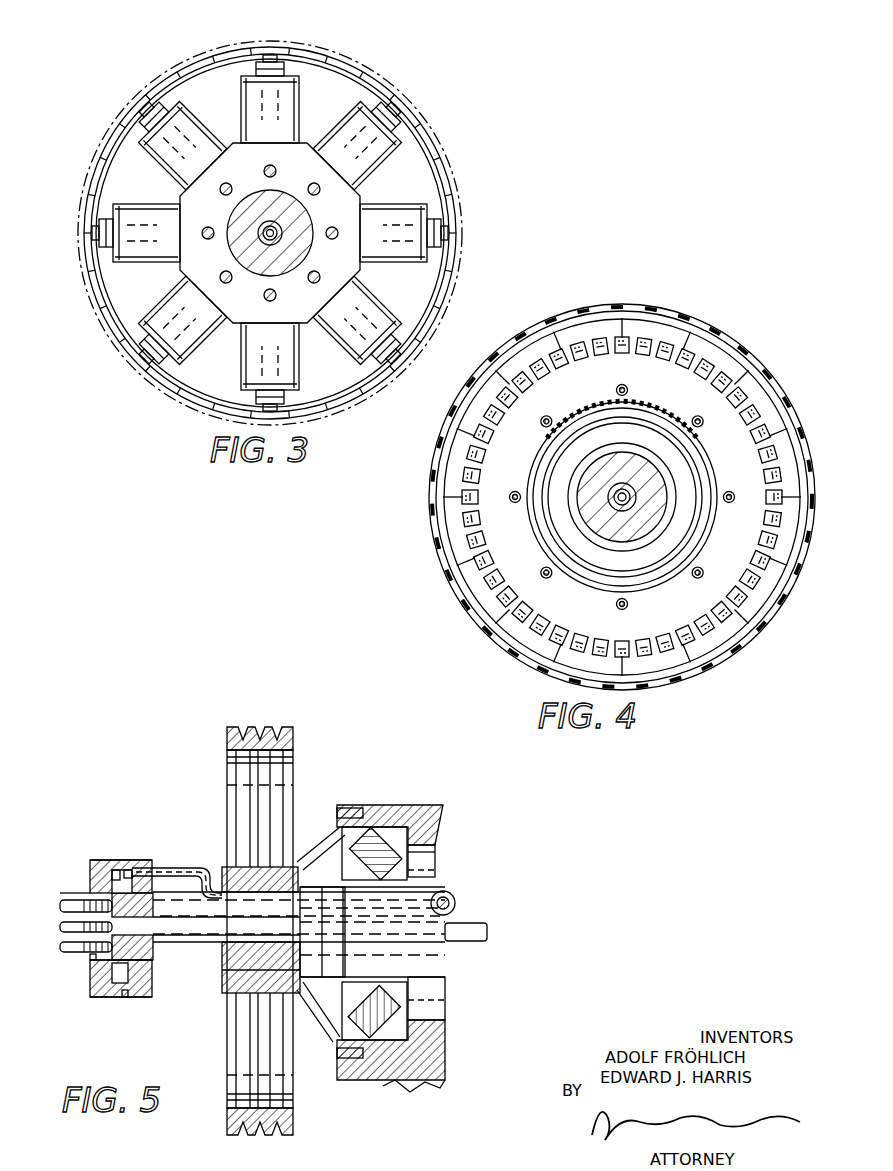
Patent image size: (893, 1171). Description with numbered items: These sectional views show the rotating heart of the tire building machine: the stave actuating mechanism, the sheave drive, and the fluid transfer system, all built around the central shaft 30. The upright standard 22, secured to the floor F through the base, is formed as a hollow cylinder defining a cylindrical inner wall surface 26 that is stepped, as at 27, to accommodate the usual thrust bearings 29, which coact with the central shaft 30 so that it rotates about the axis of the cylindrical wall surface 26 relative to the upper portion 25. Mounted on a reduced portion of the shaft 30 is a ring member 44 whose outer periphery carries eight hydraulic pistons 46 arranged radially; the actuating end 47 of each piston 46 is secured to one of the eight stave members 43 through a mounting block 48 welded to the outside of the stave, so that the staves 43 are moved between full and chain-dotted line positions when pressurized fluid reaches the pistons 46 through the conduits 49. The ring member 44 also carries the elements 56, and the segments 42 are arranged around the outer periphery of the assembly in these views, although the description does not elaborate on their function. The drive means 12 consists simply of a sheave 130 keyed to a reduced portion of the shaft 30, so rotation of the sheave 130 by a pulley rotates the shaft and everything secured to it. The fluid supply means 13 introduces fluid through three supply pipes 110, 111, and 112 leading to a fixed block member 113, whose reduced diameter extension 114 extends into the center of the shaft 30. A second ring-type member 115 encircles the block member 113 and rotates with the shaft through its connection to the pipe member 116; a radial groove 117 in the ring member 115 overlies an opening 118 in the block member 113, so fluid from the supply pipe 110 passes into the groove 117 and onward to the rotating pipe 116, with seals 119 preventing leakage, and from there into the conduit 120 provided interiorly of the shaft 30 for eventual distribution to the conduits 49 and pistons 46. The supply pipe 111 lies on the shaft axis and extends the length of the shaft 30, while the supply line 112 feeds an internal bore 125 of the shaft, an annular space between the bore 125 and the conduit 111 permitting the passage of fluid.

In FIG. 3, the stave member 43 is at (222, 52).
In FIG. 3, the mounting block 48 is at (108, 158).
In FIG. 3, the hydraulic piston 46 is at (300, 100).
In FIG. 3, the actuating end 47 is at (390, 110).
In FIG. 3, the ring member 44 is at (308, 311).
In FIG. 3, the bolt hole 56 is at (317, 186).
In FIG. 3, the internal bore 125 is at (258, 262).
In FIG. 4, the internal bore 125 is at (608, 540).
In FIG. 5, the internal bore 125 is at (470, 922).
In FIG. 3, the supply pipe 111 is at (282, 232).
In FIG. 4, the supply pipe 111 is at (636, 494).
In FIG. 5, the supply pipe 111 is at (66, 932).
In FIG. 4, the floor F is at (768, 380).
In FIG. 4, the magnet block 42 is at (745, 372).
In FIG. 4, the conduit 49 is at (696, 415).
In FIG. 5, the drive means 12 is at (265, 725).
In FIG. 5, the sheave 130 is at (228, 742).
In FIG. 5, the reduced diameter extension 114 is at (202, 945).
In FIG. 5, the fluid supply means 13 is at (112, 1000).
In FIG. 5, the supply pipe 110 is at (78, 892).
In FIG. 5, the ring-type member 115 is at (100, 860).
In FIG. 5, the radial groove 117 is at (118, 868).
In FIG. 5, the opening 118 is at (130, 878).
In FIG. 5, the pipe member 116 is at (192, 875).
In FIG. 5, the supply line 112 is at (78, 958).
In FIG. 5, the seal 119 is at (98, 972).
In FIG. 5, the fixed block member 113 is at (142, 995).
In FIG. 5, the conduit 120 is at (298, 860).
In FIG. 5, the upper portion 25 is at (420, 805).
In FIG. 5, the step 27 is at (392, 822).
In FIG. 5, the thrust bearing 29 is at (375, 828).
In FIG. 5, the cylindrical inner wall surface 26 is at (440, 852).
In FIG. 5, the central shaft 30 is at (448, 978).
In FIG. 5, the upright standard 22 is at (405, 1080).